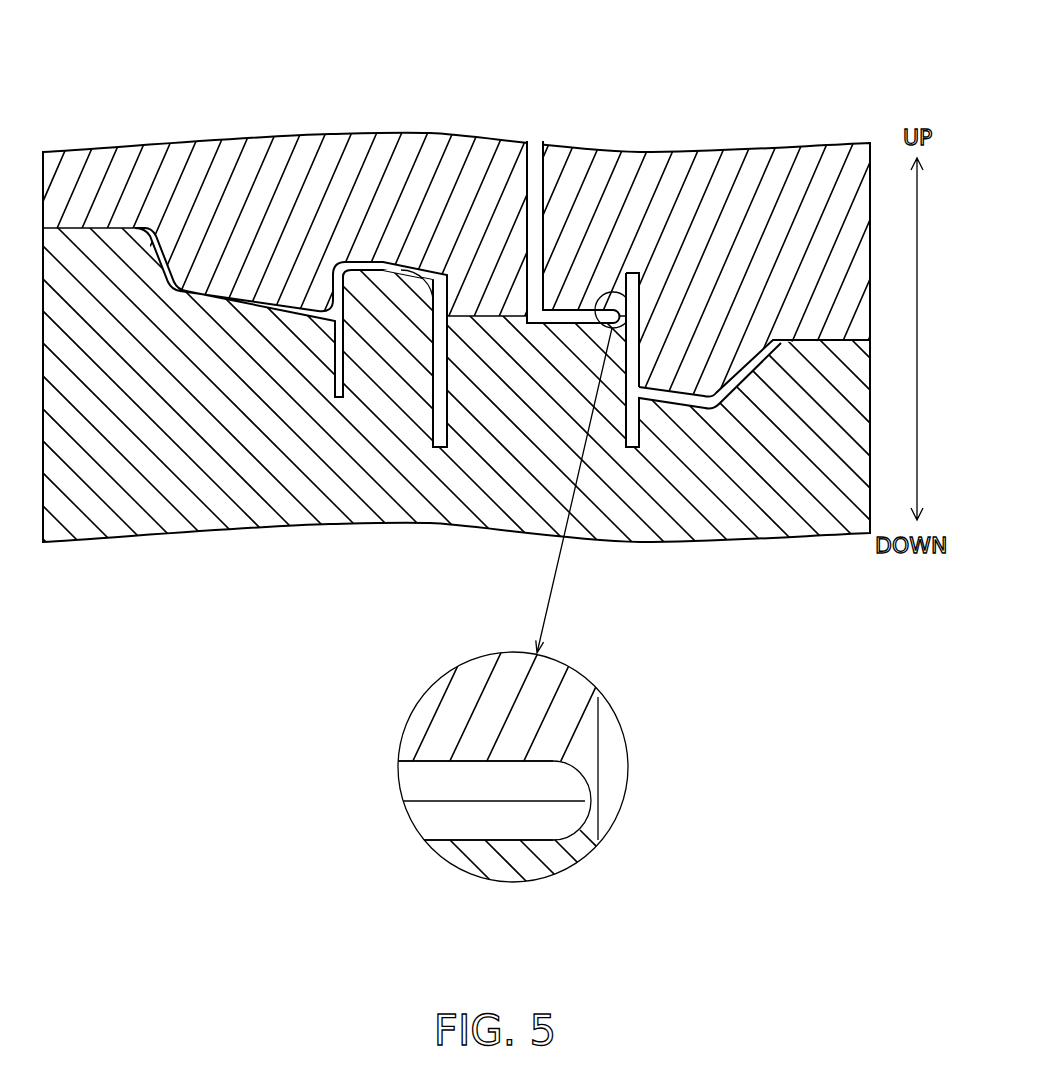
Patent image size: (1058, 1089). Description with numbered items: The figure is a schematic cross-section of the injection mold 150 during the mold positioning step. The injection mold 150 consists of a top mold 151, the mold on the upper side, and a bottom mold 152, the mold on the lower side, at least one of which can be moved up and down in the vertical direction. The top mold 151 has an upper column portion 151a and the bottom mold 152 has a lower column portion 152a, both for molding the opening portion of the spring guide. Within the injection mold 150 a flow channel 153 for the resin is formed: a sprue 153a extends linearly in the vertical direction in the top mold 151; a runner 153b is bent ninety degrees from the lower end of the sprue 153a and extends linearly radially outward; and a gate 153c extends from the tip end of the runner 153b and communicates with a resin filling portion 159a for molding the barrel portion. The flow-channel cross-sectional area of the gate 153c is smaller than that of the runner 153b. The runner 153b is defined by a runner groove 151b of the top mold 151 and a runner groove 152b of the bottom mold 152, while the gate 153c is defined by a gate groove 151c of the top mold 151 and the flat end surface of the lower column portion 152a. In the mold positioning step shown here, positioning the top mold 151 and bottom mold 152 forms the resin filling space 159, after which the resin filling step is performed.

The injection mold 150 is at (105, 119).
The top mold 151 is at (170, 140).
The upper column portion 151a is at (407, 273).
The runner groove of the top mold 151b is at (445, 762).
The gate groove 151c is at (583, 780).
The bottom mold 152 is at (158, 500).
The lower column portion 152a is at (443, 367).
The runner groove of the bottom mold 152b is at (435, 840).
The flow channel 153 is at (538, 192).
The sprue 153a is at (540, 185).
The runner 153b is at (596, 293).
The gate 153c is at (597, 762).
The resin filling space 159 is at (679, 380).
The resin filling portion 159a is at (653, 417).